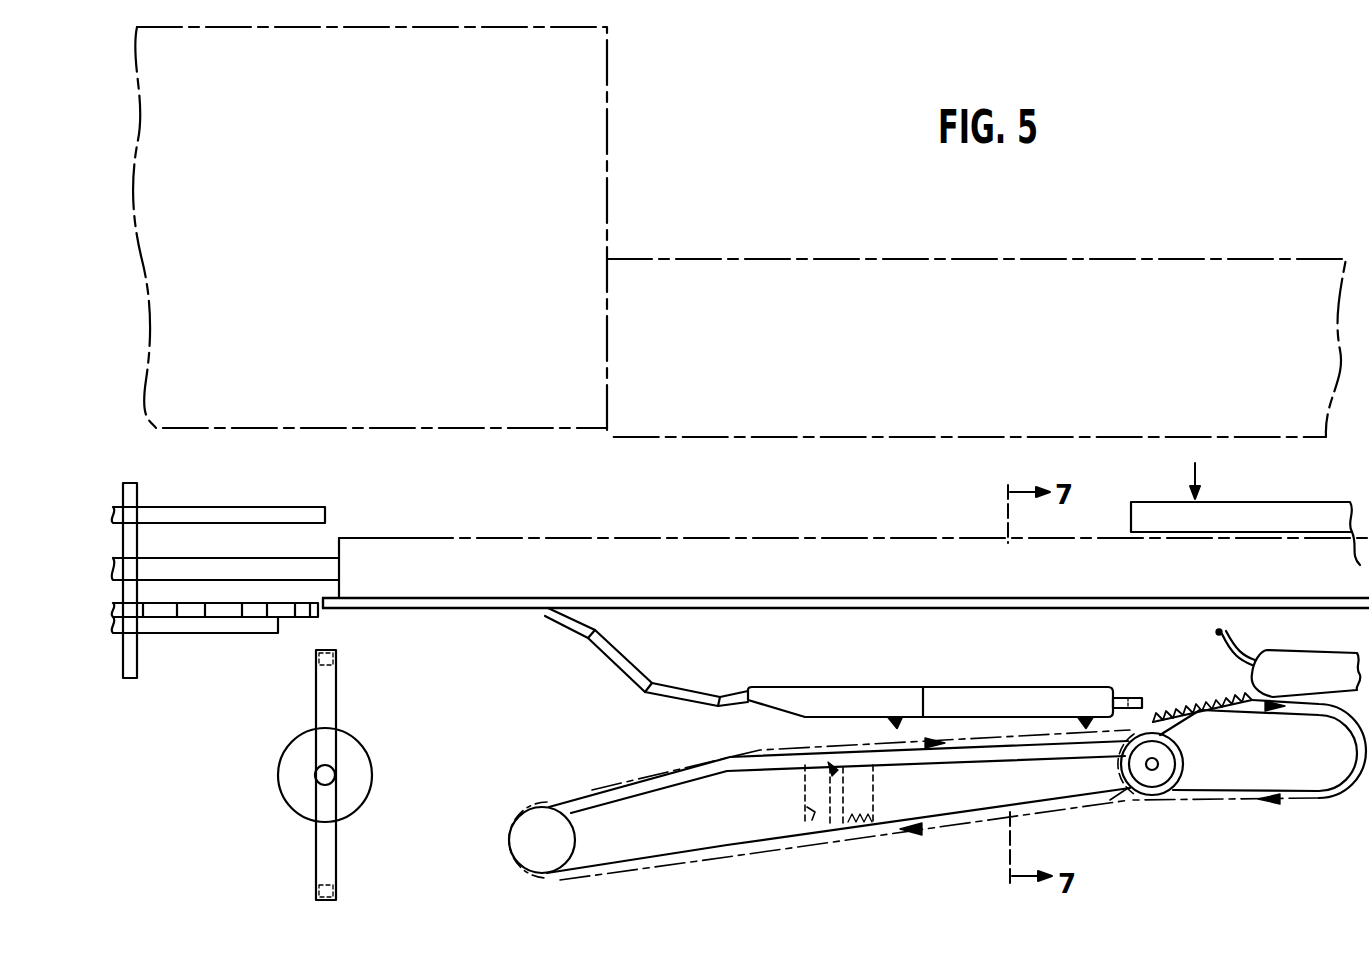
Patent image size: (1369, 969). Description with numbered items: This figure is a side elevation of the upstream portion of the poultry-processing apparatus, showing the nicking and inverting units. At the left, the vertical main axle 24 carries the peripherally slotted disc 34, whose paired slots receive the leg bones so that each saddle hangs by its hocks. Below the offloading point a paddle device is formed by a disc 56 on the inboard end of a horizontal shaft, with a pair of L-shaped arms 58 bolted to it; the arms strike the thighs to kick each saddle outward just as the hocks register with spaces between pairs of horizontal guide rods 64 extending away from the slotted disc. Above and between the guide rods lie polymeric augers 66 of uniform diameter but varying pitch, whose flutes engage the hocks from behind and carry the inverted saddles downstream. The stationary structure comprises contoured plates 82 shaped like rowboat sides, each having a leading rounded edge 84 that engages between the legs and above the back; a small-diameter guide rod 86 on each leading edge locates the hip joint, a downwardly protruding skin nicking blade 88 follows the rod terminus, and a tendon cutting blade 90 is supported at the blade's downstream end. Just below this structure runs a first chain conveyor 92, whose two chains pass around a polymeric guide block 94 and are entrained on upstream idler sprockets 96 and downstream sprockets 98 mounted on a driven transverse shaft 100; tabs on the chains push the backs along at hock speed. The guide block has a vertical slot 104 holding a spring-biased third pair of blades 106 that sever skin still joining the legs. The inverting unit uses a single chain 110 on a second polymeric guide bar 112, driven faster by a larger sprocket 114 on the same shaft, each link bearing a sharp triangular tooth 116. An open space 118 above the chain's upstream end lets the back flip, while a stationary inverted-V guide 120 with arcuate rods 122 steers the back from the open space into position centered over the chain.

The vertical main axle 24 is at (140, 660).
The peripherally slotted disc 34 is at (225, 618).
The disc 56 is at (365, 765).
The L-shaped arms 58 is at (337, 703).
The horizontal guide rods 64 is at (436, 610).
The polymeric augers 66 is at (688, 562).
The contoured plates 82 is at (842, 698).
The leading rounded edge 84 is at (745, 705).
The guide rod 86 is at (637, 663).
The skin nicking blade 88 is at (900, 715).
The tendon cutting blade 90 is at (1068, 700).
The first chain conveyor 92 is at (593, 786).
The polymeric guide block 94 is at (960, 815).
The upstream sprockets 96 is at (572, 870).
The downstream sprockets 98 is at (1155, 797).
The transverse shaft 100 is at (1159, 764).
The vertical slot 104 is at (826, 836).
The third pair of blades 106 is at (828, 762).
The single chain 110 is at (1293, 802).
The second polymeric guide bar 112 is at (1252, 792).
The sprocket 114 is at (1110, 800).
The triangular tooth 116 is at (1197, 700).
The open space 118 is at (1192, 649).
The stationary guide 120 is at (1268, 668).
The arcuate rods 122 is at (1220, 630).